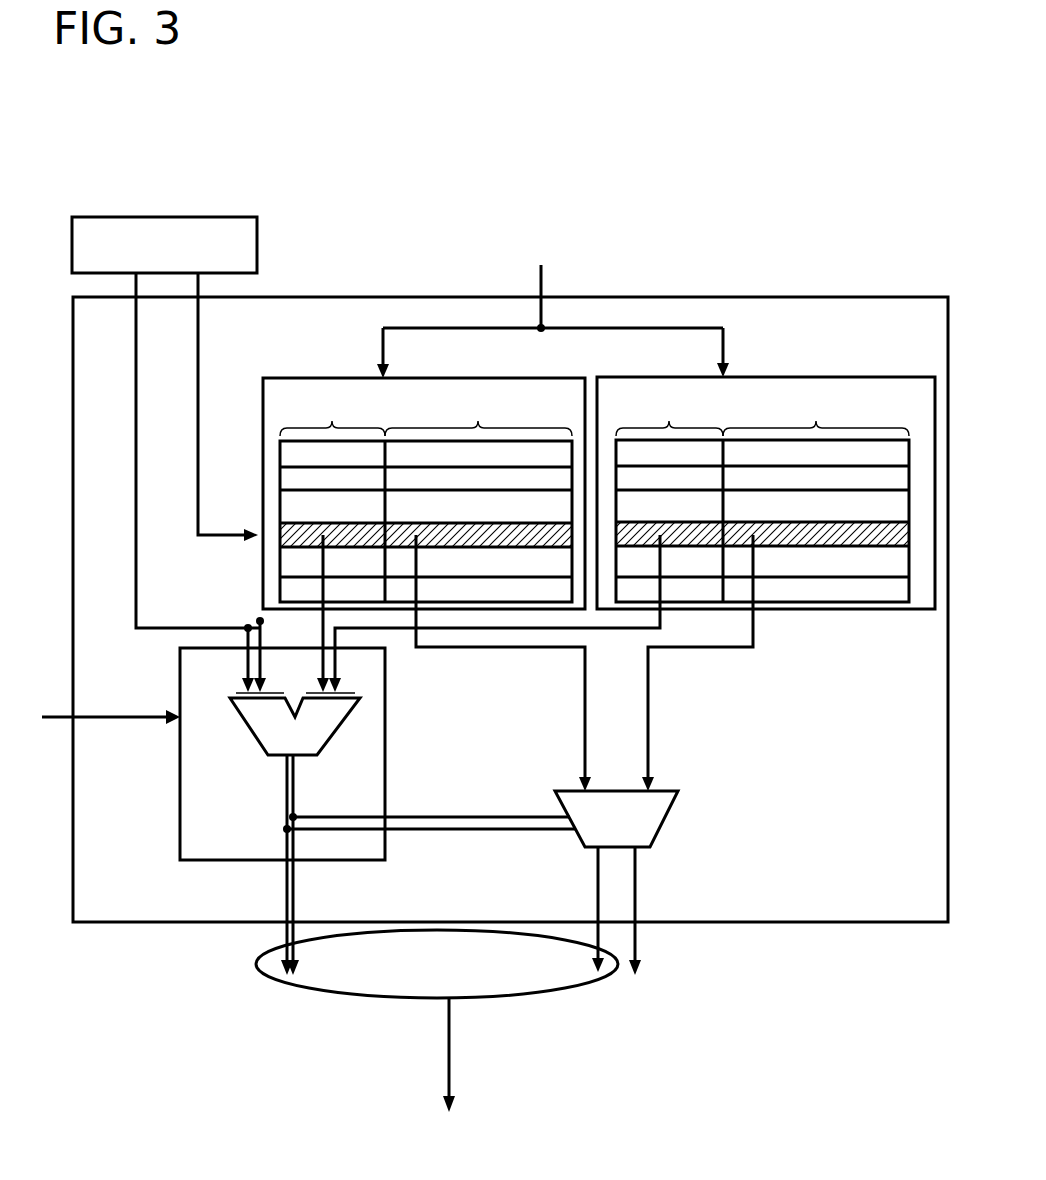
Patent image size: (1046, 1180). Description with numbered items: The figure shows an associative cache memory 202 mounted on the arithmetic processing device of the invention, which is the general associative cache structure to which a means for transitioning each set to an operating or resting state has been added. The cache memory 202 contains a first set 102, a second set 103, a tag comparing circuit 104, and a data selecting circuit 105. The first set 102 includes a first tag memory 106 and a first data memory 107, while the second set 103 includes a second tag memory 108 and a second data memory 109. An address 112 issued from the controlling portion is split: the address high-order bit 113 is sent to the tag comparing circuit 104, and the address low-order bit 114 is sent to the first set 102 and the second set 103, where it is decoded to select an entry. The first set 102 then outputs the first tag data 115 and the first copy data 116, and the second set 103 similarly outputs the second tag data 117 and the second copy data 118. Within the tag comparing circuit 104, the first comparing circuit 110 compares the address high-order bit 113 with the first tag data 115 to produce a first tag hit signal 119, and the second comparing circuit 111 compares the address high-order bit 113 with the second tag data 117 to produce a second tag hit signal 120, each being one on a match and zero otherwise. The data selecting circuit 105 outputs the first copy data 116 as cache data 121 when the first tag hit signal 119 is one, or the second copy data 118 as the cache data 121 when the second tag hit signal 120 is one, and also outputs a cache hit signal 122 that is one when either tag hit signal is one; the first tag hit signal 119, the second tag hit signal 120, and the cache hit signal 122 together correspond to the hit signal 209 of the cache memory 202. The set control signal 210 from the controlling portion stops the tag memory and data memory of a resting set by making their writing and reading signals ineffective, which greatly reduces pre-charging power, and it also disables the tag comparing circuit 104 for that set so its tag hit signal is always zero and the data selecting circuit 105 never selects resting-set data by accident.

The cache memory 202 is at (510, 609).
The address 112 is at (164, 245).
The address high-order bit 113 is at (136, 452).
The address low-order bit 114 is at (198, 452).
The set control signal 210 is at (544, 289).
The first set 102 is at (424, 493).
The second set 103 is at (766, 493).
The first tag memory 106 is at (332, 543).
The first data memory 107 is at (478, 415).
The second tag memory 108 is at (669, 414).
The second data memory 109 is at (816, 414).
The first tag data 115 is at (278, 522).
The first copy data 116 is at (477, 535).
The second tag data 117 is at (692, 535).
The second copy data 118 is at (828, 535).
The tag comparing circuit 104 is at (282, 754).
The second comparing circuit 111 is at (240, 696).
The first comparing circuit 110 is at (250, 720).
The first tag hit signal 119 is at (284, 798).
The second tag hit signal 120 is at (296, 796).
The data selecting circuit 105 is at (678, 791).
The cache hit signal 122 is at (594, 908).
The cache data 121 is at (640, 906).
The hit signal 209 is at (452, 1040).